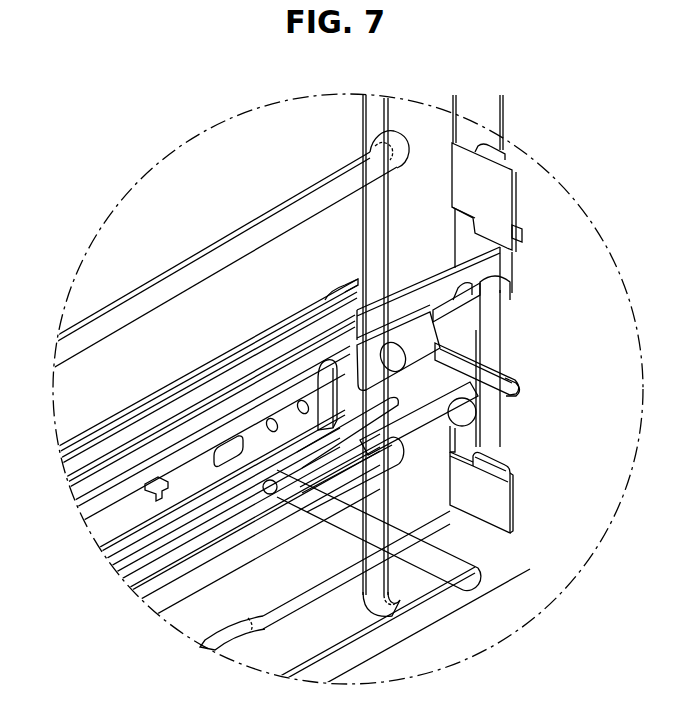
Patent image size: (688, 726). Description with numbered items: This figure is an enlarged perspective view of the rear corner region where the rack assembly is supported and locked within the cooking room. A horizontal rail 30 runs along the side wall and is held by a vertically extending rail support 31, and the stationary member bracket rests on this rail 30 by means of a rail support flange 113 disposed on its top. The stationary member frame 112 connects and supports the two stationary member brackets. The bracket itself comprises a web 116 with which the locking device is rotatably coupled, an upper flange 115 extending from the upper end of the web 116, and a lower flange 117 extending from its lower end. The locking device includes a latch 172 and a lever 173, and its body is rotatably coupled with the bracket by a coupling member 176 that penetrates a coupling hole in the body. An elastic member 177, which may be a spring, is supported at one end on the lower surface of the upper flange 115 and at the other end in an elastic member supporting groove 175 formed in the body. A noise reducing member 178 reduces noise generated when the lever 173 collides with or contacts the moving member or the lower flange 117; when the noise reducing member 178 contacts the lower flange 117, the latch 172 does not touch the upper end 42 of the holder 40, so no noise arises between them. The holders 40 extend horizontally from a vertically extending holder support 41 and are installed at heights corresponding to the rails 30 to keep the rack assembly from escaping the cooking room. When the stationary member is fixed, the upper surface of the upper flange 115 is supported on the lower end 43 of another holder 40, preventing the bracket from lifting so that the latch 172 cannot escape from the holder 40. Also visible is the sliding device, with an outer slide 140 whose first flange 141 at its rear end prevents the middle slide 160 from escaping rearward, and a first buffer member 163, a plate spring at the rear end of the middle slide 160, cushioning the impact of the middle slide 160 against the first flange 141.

The rail 30 is at (300, 200).
The rail support 31 is at (366, 108).
The holder 40 is at (515, 195).
The holder support 41 is at (476, 137).
The upper end 42 is at (496, 148).
The lower end 43 is at (520, 248).
The stationary member frame 112 is at (445, 565).
The rail support flange 113 is at (247, 365).
The upper flange 115 is at (438, 270).
The web 116 is at (410, 383).
The lower flange 117 is at (465, 410).
The outer slide 140 is at (183, 450).
The first flange 141 is at (317, 400).
The middle slide 160 is at (110, 548).
The first buffer member 163 is at (158, 477).
The latch 172 is at (500, 300).
The lever 173 is at (515, 390).
The elastic member supporting groove 175 is at (470, 318).
The coupling member 176 is at (400, 302).
The elastic member 177 is at (455, 300).
The noise reducing member 178 is at (490, 362).